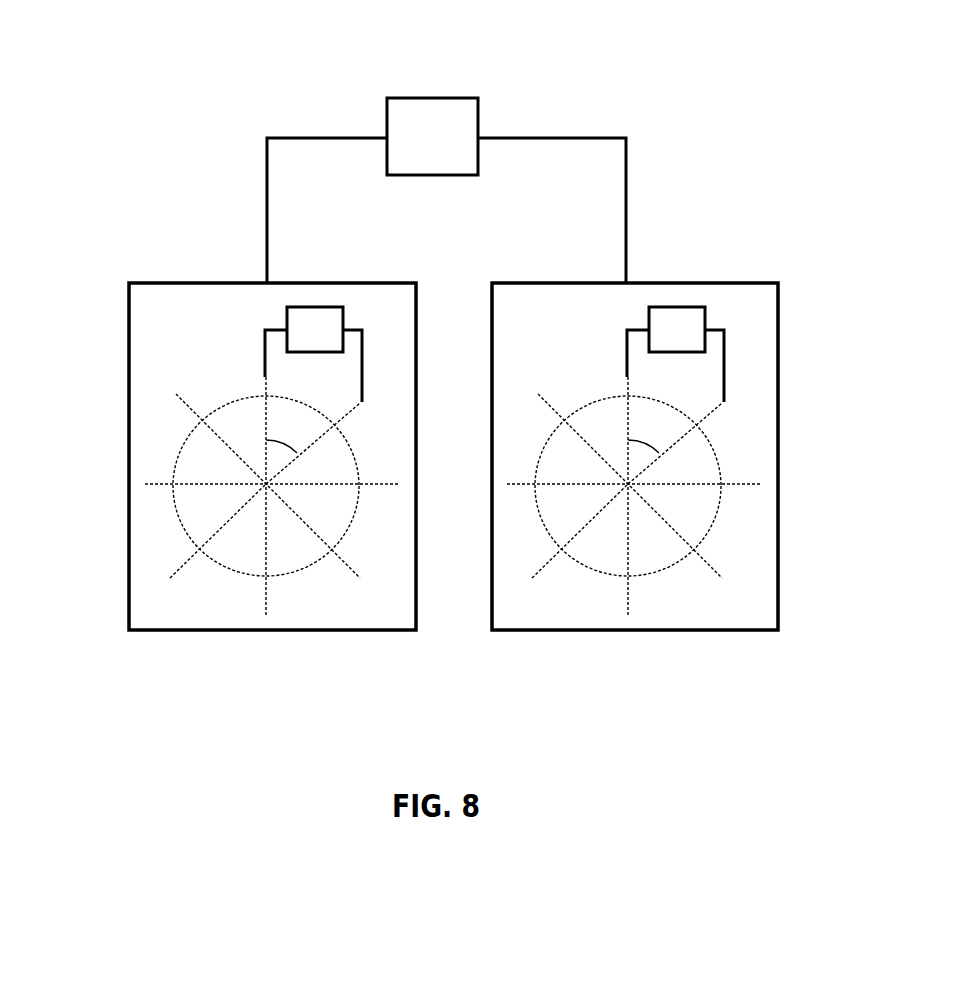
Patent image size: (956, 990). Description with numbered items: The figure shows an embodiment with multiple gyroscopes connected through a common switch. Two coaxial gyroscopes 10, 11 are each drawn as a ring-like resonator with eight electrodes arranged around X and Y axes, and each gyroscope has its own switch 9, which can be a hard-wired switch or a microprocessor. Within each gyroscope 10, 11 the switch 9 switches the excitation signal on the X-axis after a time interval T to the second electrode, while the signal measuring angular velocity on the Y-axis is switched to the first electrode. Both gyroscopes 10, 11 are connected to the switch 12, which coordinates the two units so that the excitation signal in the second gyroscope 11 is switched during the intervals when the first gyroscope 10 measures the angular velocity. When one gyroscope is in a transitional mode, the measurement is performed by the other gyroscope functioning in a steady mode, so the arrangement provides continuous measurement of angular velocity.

The switch 9 is at (287, 312).
The gyroscope 10 is at (163, 283).
The gyroscope 11 is at (723, 282).
The switch 12 is at (480, 103).